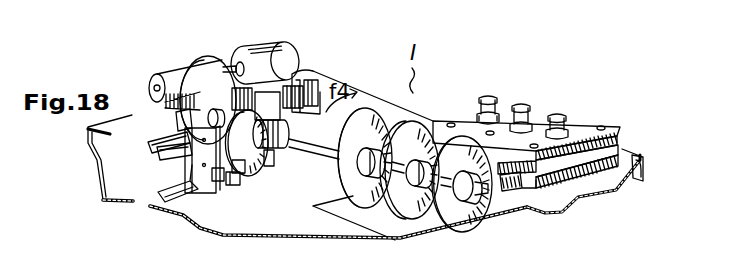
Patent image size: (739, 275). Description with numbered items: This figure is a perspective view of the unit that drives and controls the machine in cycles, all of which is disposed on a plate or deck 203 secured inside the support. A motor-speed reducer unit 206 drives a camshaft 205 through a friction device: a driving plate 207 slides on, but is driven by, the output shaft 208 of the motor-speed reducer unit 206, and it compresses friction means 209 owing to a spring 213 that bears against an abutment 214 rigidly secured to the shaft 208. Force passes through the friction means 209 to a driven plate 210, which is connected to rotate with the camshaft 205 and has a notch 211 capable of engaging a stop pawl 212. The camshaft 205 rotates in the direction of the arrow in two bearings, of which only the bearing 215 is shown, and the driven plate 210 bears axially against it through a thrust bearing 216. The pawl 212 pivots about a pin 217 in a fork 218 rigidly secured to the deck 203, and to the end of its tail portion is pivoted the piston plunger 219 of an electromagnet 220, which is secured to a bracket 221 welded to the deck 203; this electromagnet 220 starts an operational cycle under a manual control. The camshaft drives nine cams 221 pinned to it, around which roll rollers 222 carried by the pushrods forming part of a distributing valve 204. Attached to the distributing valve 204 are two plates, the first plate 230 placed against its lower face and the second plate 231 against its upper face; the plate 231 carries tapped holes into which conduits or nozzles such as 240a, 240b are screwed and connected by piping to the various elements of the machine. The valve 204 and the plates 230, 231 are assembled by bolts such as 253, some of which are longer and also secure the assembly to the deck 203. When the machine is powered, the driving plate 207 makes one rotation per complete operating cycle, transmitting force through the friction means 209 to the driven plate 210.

The plate or deck 203 is at (382, 240).
The distributing valve 204 is at (611, 177).
The camshaft 205 is at (478, 192).
The motor-speed reducer unit 206 is at (173, 73).
The driving plate 207 is at (192, 204).
The output shaft 208 is at (212, 115).
The friction means 209 is at (193, 127).
The driven plate 210 is at (273, 90).
The notch 211 is at (258, 168).
The stop pawl 212 is at (268, 167).
The spring 213 is at (249, 82).
The abutment 214 is at (182, 118).
The bearing 215 is at (316, 109).
The thrust bearing 216 is at (305, 74).
The pin 217 is at (240, 174).
The fork 218 is at (228, 186).
The piston plunger 219 is at (217, 177).
The electromagnet 220 is at (162, 142).
The bracket / cams 221 is at (408, 122).
The rollers 222 is at (546, 204).
The first plate 230 is at (588, 176).
The second plate 231 is at (575, 118).
The conduit or nozzle 240a is at (482, 103).
The conduit or nozzle 240b is at (518, 111).
The bolt 253 is at (603, 126).